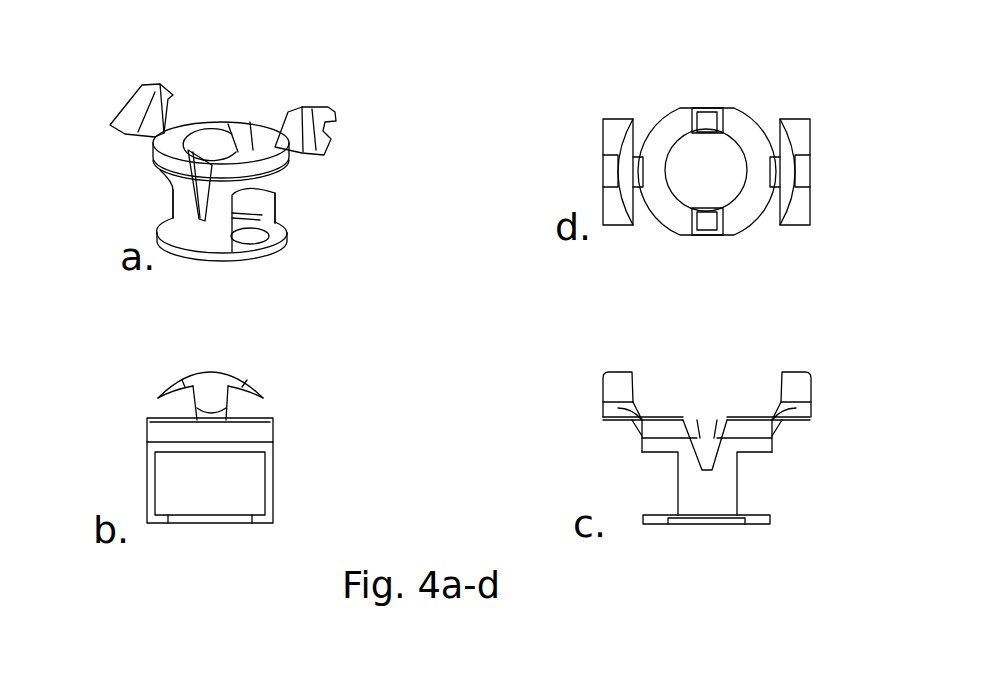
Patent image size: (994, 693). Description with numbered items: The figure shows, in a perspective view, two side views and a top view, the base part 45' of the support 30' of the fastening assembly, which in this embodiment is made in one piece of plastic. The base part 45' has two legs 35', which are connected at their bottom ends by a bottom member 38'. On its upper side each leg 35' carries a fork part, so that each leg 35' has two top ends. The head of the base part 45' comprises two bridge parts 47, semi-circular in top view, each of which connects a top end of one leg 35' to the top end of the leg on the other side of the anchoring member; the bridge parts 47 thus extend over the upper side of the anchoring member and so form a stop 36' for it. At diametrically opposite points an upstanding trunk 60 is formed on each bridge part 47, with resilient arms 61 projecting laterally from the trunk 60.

In FIG. 4a, the support 30' is at (165, 193).
In FIG. 4a, the base part 45' is at (246, 100).
In FIG. 4a, the bridge part 47 is at (153, 145).
In FIG. 4b, the bridge part 47 is at (168, 438).
In FIG. 4c, the bridge part 47 is at (758, 430).
In FIG. 4d, the bridge part 47 is at (668, 130).
In FIG. 4a, the bottom member 38' is at (264, 250).
In FIG. 4b, the bottom member 38' is at (210, 545).
In FIG. 4a, the leg 35' is at (212, 254).
In FIG. 4b, the leg 35' is at (222, 470).
In FIG. 4c, the leg 35' is at (667, 483).
In FIG. 4c, the stop 36' is at (745, 499).
In FIG. 4b, the trunk 60 is at (208, 400).
In FIG. 4c, the trunk 60 is at (803, 407).
In FIG. 4d, the trunk 60 is at (808, 168).
In FIG. 4b, the resilient arm 61 is at (247, 390).
In FIG. 4c, the resilient arm 61 is at (622, 385).
In FIG. 4d, the resilient arm 61 is at (797, 128).